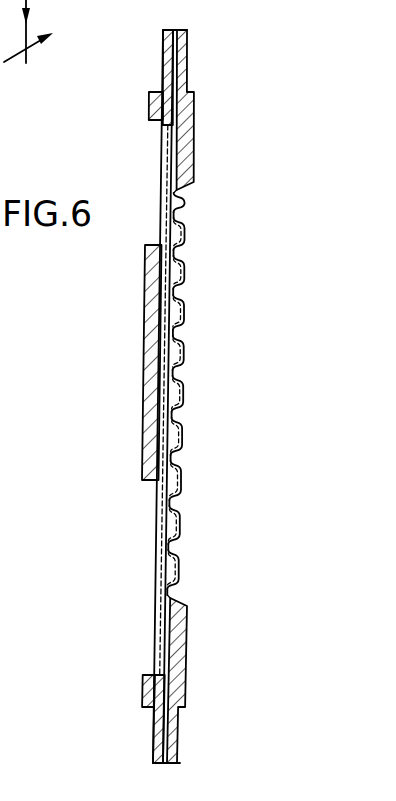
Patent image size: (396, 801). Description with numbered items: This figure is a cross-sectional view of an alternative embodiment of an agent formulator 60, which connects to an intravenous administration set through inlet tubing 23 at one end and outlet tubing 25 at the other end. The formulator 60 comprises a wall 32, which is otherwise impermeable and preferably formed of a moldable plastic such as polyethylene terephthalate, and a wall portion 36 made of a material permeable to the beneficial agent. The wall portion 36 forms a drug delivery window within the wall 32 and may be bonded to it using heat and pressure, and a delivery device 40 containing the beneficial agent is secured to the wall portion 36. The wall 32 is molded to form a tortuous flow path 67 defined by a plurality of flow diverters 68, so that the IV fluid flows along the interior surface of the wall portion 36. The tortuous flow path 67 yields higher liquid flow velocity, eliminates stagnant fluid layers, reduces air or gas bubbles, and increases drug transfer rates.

The inlet tubing 23 is at (186, 30).
The outlet tubing 25 is at (181, 763).
The wall 32 is at (193, 183).
The wall portion 36 is at (163, 183).
The delivery device 40 is at (135, 457).
The agent formulator 60 is at (252, 106).
The tortuous flow path 67 is at (184, 254).
The flow diverters 68 is at (176, 375).